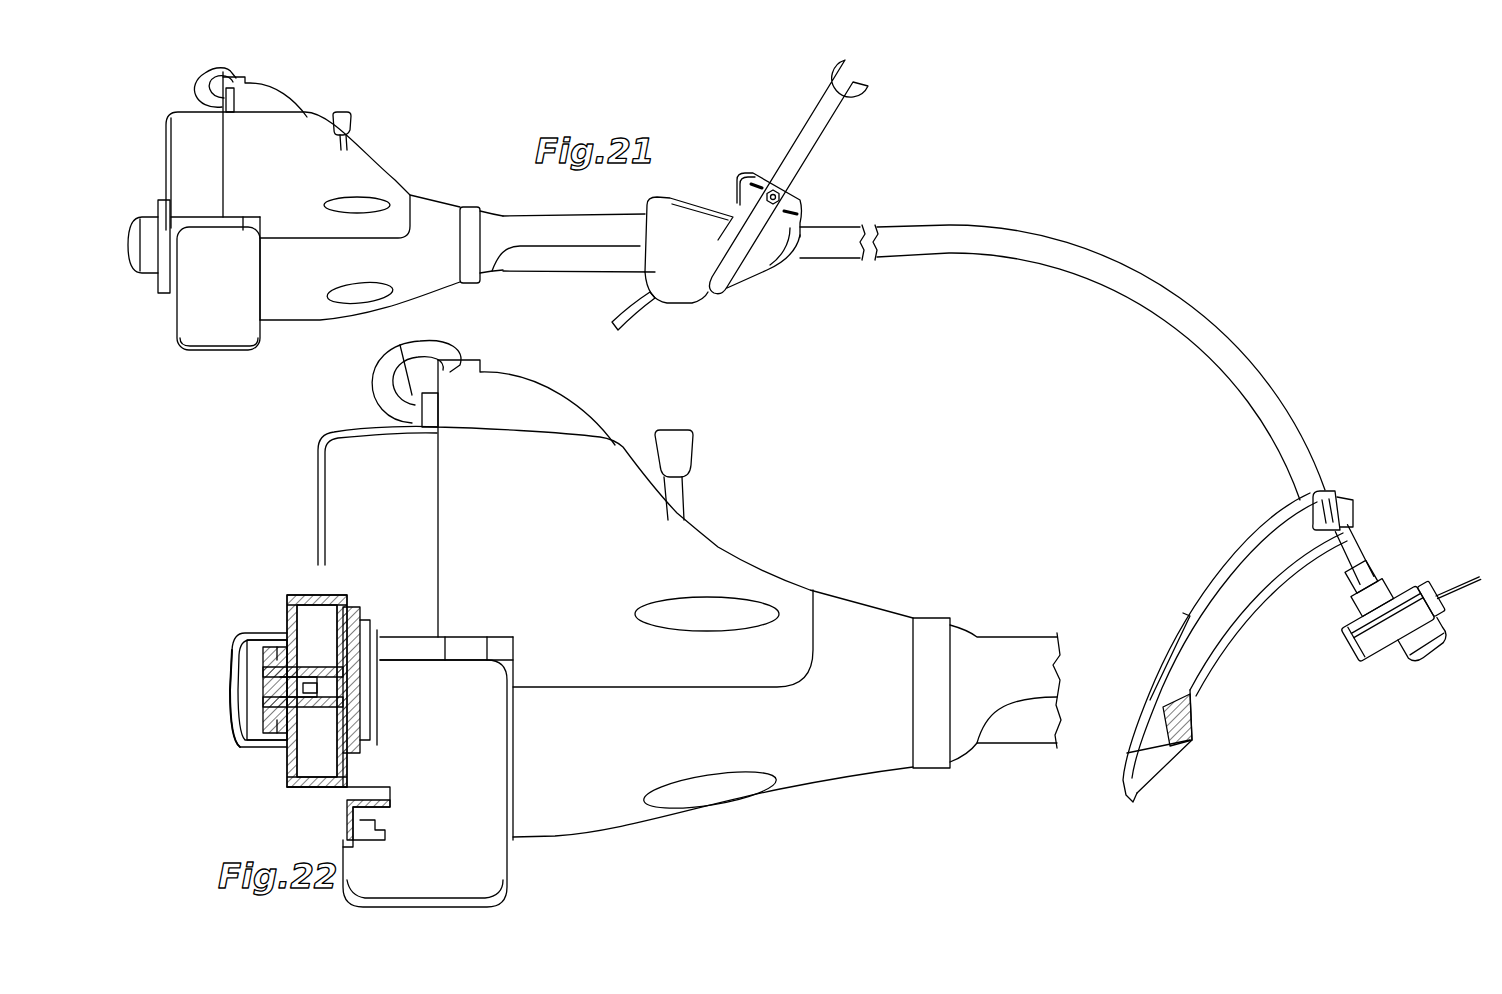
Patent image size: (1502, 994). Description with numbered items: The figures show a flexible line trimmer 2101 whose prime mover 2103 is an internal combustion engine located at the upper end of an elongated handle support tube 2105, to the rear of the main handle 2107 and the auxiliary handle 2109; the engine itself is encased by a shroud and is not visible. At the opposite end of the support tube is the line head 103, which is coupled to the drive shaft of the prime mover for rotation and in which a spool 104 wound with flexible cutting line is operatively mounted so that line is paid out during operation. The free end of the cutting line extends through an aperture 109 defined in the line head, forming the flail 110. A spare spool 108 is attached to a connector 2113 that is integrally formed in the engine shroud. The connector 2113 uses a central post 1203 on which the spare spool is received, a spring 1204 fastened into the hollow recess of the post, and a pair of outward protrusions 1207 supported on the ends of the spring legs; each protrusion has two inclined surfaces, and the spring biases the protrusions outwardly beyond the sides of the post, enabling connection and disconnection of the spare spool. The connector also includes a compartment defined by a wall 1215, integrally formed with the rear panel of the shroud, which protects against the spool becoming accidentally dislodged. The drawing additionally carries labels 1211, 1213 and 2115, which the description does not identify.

In FIG. 21, the line trimmer 2101 is at (1005, 164).
In FIG. 21, the housing 1211 is at (277, 120).
In FIG. 22, the housing 1211 is at (320, 455).
In FIG. 21, the prime mover 2103 is at (392, 170).
In FIG. 21, the spare line spool 108 is at (150, 215).
In FIG. 22, the spare line spool 108 is at (285, 627).
In FIG. 21, the battery pack 1213 is at (166, 310).
In FIG. 21, the main handle 2107 is at (560, 273).
In FIG. 21, the auxiliary handle 2109 is at (882, 66).
In FIG. 21, the handle support tube 2105 is at (957, 262).
In FIG. 21, the aperture 109 is at (1440, 604).
In FIG. 21, the flail 110 is at (1456, 590).
In FIG. 21, the line head 103 is at (1348, 618).
In FIG. 21, the spool 104 is at (1378, 657).
In FIG. 22, the wall 1215 is at (305, 595).
In FIG. 22, the connector 2113 is at (258, 602).
In FIG. 22, the outward protrusions 1207 is at (237, 653).
In FIG. 22, the spring 1204 is at (280, 686).
In FIG. 22, the central post 1203 is at (275, 696).
In FIG. 22, the connector base 2115 is at (310, 790).